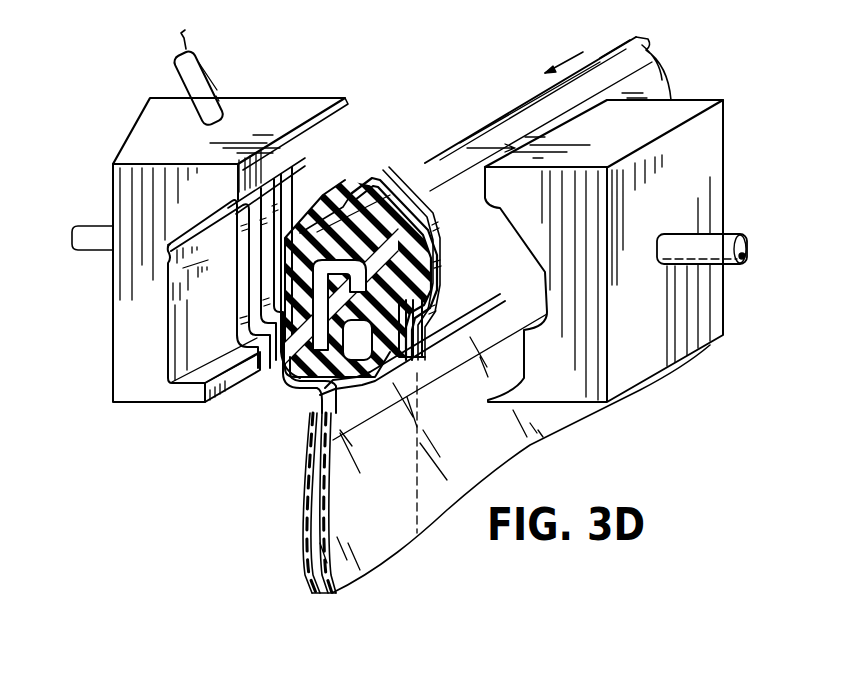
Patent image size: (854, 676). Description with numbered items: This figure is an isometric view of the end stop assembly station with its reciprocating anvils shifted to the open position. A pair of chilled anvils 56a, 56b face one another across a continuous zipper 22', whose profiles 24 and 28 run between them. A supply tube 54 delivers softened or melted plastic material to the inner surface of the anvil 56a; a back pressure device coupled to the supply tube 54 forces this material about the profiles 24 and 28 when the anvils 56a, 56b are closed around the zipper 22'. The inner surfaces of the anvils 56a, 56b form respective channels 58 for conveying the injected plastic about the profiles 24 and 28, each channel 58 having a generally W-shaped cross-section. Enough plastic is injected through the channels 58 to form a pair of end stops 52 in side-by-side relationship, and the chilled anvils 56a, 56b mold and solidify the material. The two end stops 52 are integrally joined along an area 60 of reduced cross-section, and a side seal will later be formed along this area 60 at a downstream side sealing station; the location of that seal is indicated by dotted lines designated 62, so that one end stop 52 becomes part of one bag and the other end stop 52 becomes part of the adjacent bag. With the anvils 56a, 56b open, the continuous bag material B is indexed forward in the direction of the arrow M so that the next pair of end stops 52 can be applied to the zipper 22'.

The continuous zipper 22' is at (606, 35).
The profile 24 is at (320, 151).
The profile 28 is at (320, 215).
The end stop 52 is at (373, 177).
The supply tube 54 is at (187, 93).
The chilled anvil 56a is at (120, 385).
The chilled anvil 56b is at (633, 380).
The channel 58 is at (242, 287).
The area of reduced cross-section 60 is at (440, 207).
The side seal location 62 is at (417, 513).
The continuous bag material B is at (391, 474).
The direction arrow M is at (564, 55).